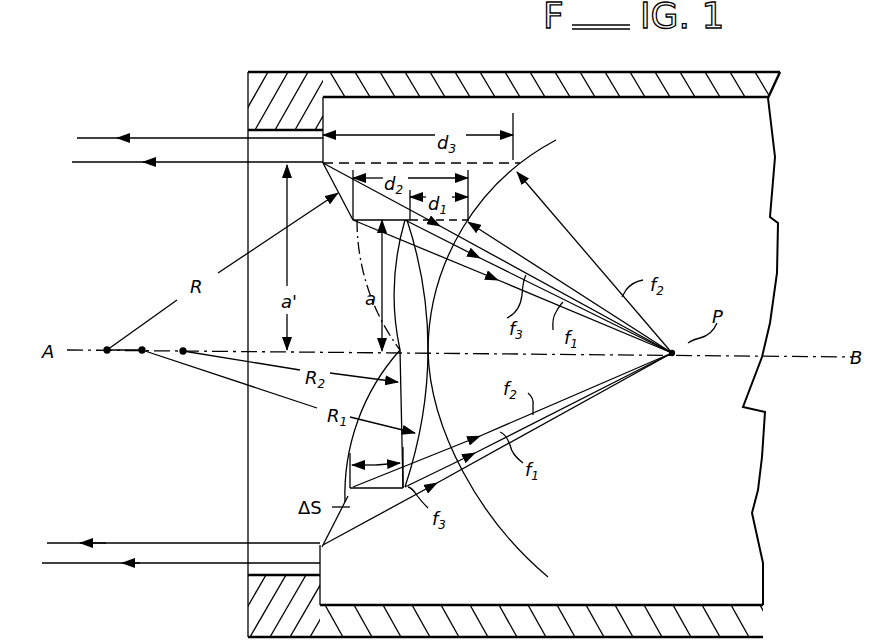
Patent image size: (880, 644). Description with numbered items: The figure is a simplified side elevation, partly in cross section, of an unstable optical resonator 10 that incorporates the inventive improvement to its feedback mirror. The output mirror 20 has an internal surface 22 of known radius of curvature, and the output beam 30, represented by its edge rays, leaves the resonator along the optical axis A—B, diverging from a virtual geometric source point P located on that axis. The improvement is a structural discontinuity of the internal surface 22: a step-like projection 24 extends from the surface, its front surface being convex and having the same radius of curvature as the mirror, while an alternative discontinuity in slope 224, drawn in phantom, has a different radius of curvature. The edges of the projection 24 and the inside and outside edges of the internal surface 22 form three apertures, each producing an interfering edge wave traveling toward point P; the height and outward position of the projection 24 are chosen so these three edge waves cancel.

The unstable optical resonator 10 is at (158, 432).
The output mirror 20 is at (256, 195).
The internal surface 22 is at (340, 527).
The structural discontinuity in slope 224 is at (383, 450).
The step-like projection 24 is at (398, 262).
The output beam 30 is at (188, 162).